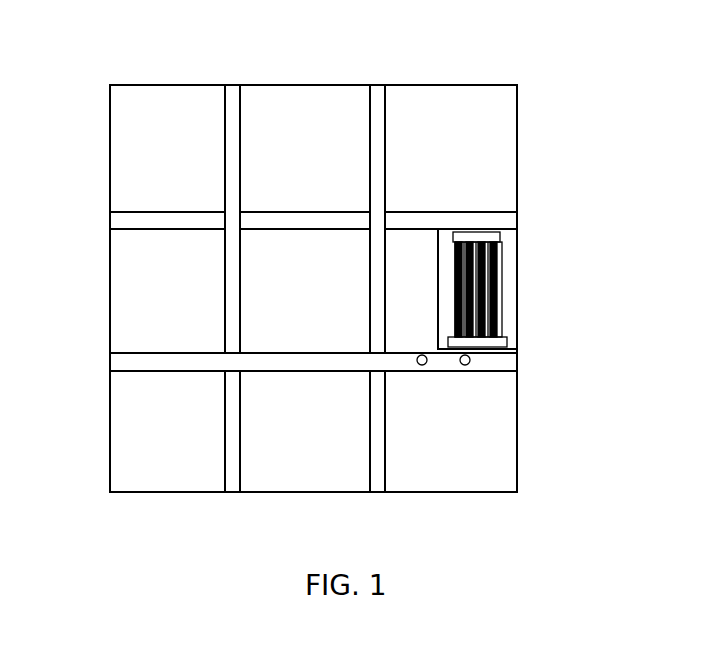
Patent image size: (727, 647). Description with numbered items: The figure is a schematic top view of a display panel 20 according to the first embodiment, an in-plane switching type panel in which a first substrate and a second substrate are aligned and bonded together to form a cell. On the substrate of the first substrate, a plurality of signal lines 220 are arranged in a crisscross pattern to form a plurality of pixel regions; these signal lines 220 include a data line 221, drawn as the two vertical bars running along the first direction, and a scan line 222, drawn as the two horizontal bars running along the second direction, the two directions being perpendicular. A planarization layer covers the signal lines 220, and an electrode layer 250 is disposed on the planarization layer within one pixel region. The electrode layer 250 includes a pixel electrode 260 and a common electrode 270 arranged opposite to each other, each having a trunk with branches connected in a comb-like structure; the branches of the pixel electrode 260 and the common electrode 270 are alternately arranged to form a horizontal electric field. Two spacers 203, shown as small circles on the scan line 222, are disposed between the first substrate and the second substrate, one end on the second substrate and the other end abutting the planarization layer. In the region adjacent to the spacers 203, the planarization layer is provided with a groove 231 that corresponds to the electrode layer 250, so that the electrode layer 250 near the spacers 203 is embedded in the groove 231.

The display panel 20 is at (116, 40).
The signal lines 220 is at (322, 39).
The data line 221 is at (232, 117).
The scan line 222 is at (278, 225).
The electrode layer 250 is at (575, 267).
The pixel electrode 260 is at (502, 306).
The common electrode 270 is at (498, 270).
The groove 231 is at (507, 339).
The spacer 203 is at (465, 366).